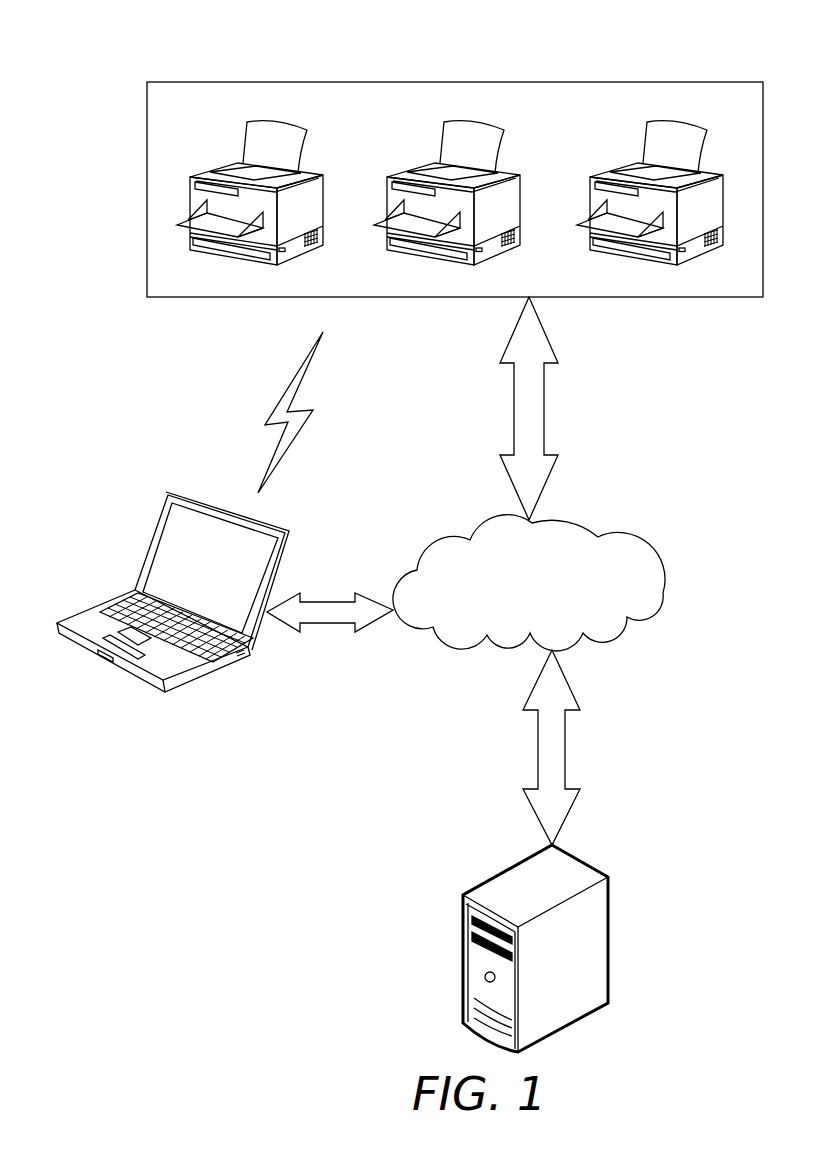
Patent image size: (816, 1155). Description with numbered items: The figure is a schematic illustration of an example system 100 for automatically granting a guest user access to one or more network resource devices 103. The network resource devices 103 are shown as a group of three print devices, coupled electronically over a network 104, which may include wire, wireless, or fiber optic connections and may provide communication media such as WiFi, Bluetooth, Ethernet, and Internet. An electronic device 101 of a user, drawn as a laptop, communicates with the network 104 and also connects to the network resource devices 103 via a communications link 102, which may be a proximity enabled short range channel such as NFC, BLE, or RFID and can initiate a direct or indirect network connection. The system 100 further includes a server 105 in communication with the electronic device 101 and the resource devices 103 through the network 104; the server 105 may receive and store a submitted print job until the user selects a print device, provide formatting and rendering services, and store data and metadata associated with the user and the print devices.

The system 100 is at (152, 57).
The electronic device 101 is at (188, 680).
The communications link 102 is at (277, 407).
The network resource devices 103 is at (608, 81).
The network 104 is at (673, 582).
The server 105 is at (610, 928).